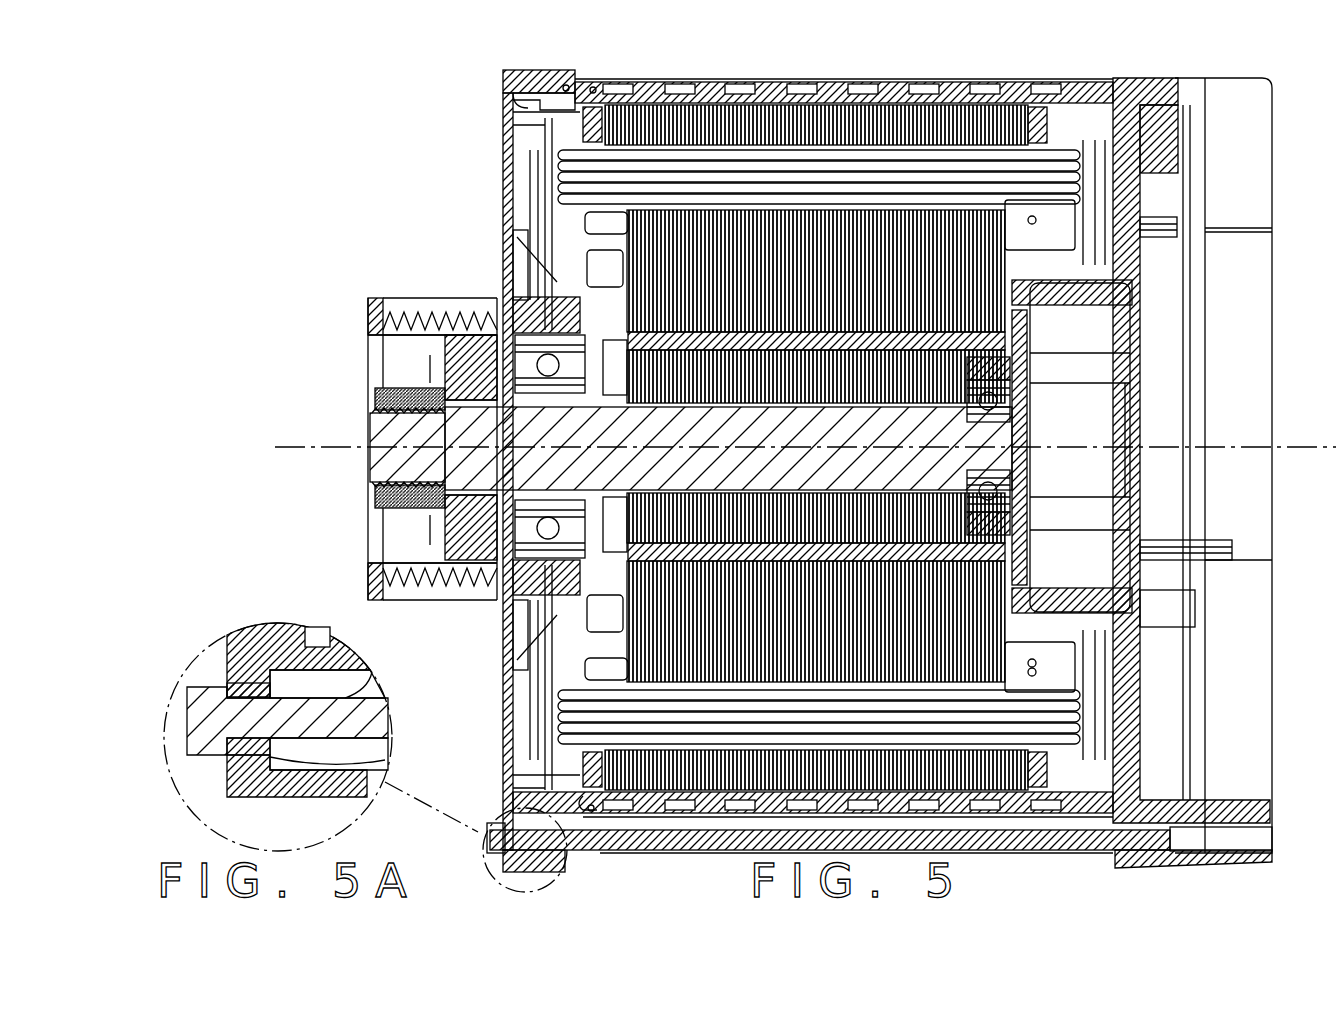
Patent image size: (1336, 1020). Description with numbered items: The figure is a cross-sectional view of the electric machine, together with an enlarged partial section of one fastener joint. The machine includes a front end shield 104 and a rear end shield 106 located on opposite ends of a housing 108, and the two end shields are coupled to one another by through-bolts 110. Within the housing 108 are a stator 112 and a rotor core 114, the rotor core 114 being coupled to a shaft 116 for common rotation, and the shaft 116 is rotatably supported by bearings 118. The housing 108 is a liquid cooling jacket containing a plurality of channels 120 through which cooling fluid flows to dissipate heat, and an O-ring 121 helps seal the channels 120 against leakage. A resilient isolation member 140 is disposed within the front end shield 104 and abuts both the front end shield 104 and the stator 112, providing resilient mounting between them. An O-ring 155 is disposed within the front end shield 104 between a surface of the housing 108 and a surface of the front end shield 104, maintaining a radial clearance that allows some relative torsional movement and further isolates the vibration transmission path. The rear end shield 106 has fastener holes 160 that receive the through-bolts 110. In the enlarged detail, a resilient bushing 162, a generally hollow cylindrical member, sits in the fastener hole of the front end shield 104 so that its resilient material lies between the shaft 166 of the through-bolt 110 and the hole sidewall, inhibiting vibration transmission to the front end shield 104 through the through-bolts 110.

In FIG. 5, the front end shield 104 is at (503, 100).
In FIG. 5A, the front end shield 104 is at (272, 622).
In FIG. 5, the rear end shield 106 is at (1200, 78).
In FIG. 5, the housing 108 is at (690, 82).
In FIG. 5, the through-bolts 110 is at (950, 850).
In FIG. 5A, the through-bolts 110 is at (187, 710).
In FIG. 5, the stator 112 is at (990, 795).
In FIG. 5, the rotor core 114 is at (897, 205).
In FIG. 5, the shaft 116 is at (370, 440).
In FIG. 5, the bearings 118 is at (535, 330).
In FIG. 5, the channels 120 is at (847, 82).
In FIG. 5, the O-ring 121 is at (592, 812).
In FIG. 5, the resilient isolation member 140 is at (512, 150).
In FIG. 5, the O-ring 155 is at (575, 70).
In FIG. 5, the fastener holes 160 is at (1272, 840).
In FIG. 5A, the resilient bushings 162 is at (380, 748).
In FIG. 5, the shaft 166 is at (678, 851).
In FIG. 5A, the shaft 166 is at (365, 690).